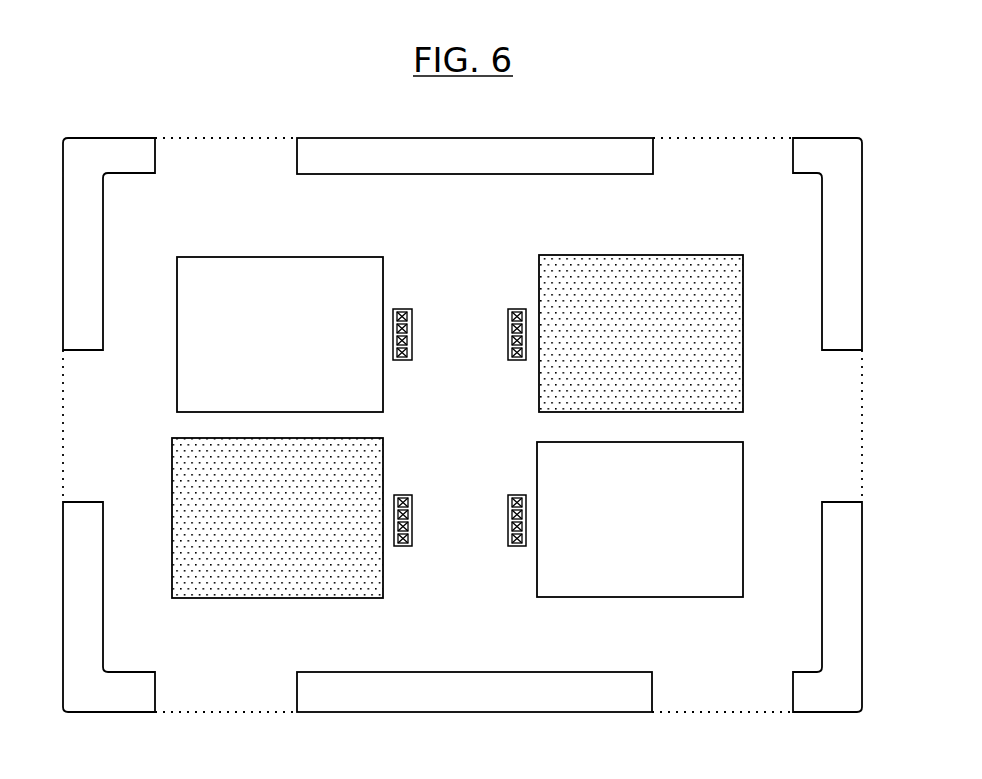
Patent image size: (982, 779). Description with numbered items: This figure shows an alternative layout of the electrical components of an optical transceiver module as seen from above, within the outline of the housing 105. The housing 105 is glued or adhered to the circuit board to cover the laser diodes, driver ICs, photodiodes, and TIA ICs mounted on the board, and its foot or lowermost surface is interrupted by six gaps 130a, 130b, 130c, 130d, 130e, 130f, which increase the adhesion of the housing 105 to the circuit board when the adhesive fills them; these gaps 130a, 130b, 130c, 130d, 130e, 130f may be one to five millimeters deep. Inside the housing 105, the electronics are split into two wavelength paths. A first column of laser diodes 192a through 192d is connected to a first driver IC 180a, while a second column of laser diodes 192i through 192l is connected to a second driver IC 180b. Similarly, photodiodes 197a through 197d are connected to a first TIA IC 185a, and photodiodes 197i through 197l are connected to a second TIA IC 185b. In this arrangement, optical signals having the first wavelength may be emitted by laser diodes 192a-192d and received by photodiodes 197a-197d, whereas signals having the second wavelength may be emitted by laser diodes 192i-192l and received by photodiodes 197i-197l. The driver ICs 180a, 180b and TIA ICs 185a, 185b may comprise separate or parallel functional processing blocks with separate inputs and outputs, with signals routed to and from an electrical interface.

The housing 105 is at (468, 153).
The gap 130a is at (227, 685).
The gap 130b is at (718, 683).
The gap 130c is at (837, 418).
The gap 130d is at (725, 165).
The gap 130e is at (222, 165).
The gap 130f is at (87, 418).
The first driver IC 180a is at (666, 343).
The second driver IC 180b is at (305, 528).
The first TIA IC 185a is at (307, 345).
The second TIA IC 185b is at (665, 528).
The laser diode 192a is at (508, 318).
The laser diode 192d is at (508, 350).
The laser diode 192i is at (412, 500).
The laser diode 192l is at (412, 537).
The photodiode 197a is at (393, 317).
The photodiode 197d is at (412, 350).
The photodiode 197i is at (508, 500).
The photodiode 197l is at (526, 537).